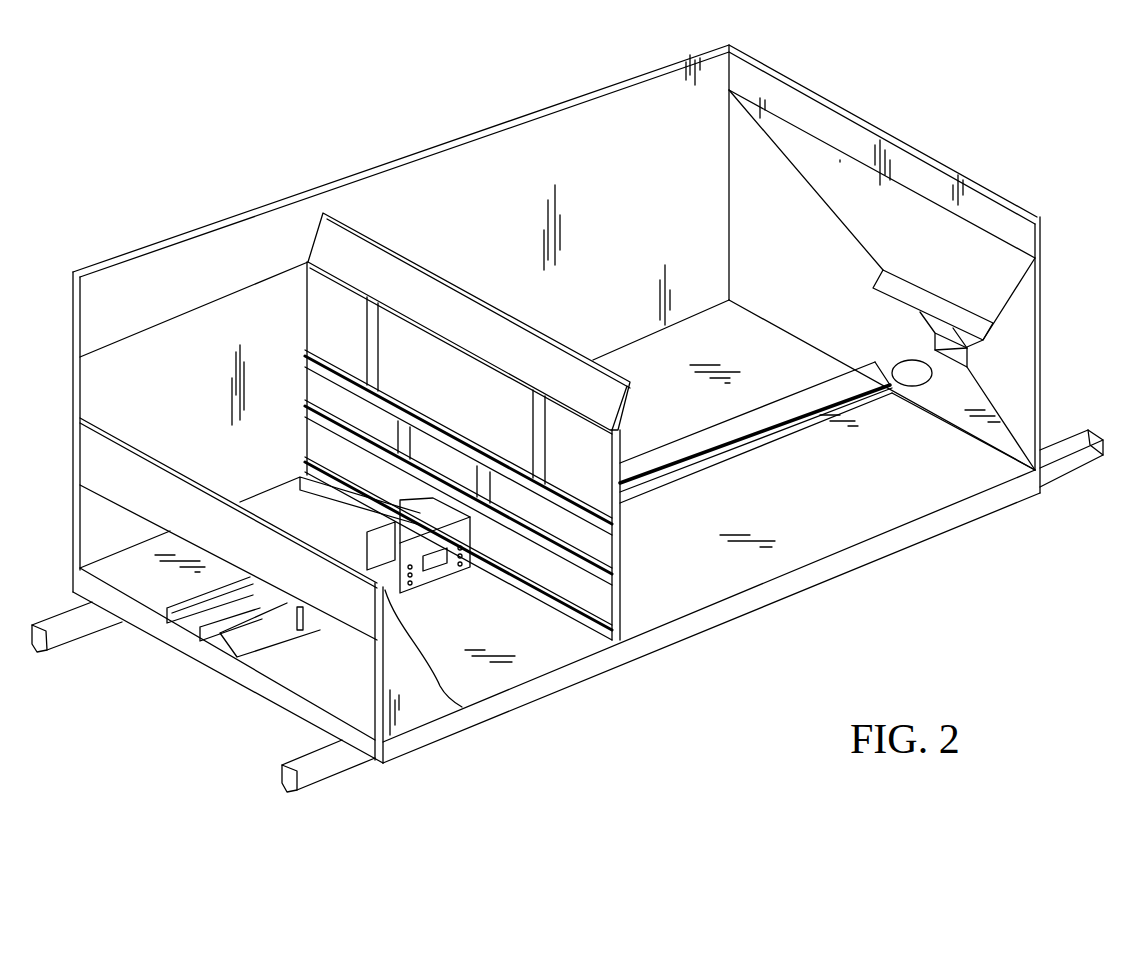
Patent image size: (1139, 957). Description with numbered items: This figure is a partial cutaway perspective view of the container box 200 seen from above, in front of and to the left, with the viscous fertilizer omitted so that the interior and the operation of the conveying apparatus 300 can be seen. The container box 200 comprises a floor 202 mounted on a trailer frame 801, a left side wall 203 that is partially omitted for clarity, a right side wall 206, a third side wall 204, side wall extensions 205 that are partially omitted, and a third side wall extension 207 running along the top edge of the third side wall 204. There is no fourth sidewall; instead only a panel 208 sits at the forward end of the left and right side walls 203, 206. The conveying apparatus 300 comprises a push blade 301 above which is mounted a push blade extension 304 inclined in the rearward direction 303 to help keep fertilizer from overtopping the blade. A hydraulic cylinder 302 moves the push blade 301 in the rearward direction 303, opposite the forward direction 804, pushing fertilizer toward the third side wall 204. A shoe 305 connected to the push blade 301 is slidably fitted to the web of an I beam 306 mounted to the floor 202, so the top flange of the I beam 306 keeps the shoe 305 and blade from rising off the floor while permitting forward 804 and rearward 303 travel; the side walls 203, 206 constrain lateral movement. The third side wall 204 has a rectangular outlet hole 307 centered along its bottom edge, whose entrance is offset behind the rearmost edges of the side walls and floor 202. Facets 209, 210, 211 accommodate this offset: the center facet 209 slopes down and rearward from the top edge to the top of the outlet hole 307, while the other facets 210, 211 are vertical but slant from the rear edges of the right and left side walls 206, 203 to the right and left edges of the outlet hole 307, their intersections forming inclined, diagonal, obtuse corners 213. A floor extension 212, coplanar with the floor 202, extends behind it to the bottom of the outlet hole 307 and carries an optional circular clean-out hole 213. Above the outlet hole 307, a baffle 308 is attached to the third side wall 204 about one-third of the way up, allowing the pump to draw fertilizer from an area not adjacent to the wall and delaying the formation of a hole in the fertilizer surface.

The container box 200 is at (438, 76).
The floor 202 is at (860, 490).
The left side wall 203 is at (444, 684).
The third side wall 204 is at (890, 104).
The side wall extensions 205 is at (515, 170).
The right side wall 206 is at (660, 222).
The third side wall extension 207 is at (847, 134).
The panel 208 is at (227, 532).
The center facet 209 is at (937, 250).
The facet 210 is at (800, 248).
The facet 211 is at (1024, 372).
The floor extension 212 is at (874, 359).
The obtuse corners 213 is at (774, 127).
The conveying apparatus 300 is at (320, 148).
The push blade 301 is at (444, 384).
The hydraulic cylinder 302 is at (210, 628).
The rearward direction 303 is at (1021, 567).
The push blade extension 304 is at (447, 309).
The shoe 305 is at (441, 541).
The I beam 306 is at (650, 468).
The outlet hole 307 is at (958, 357).
The baffle 308 is at (886, 284).
The trailer frame 801 is at (322, 771).
The forward direction 804 is at (868, 630).